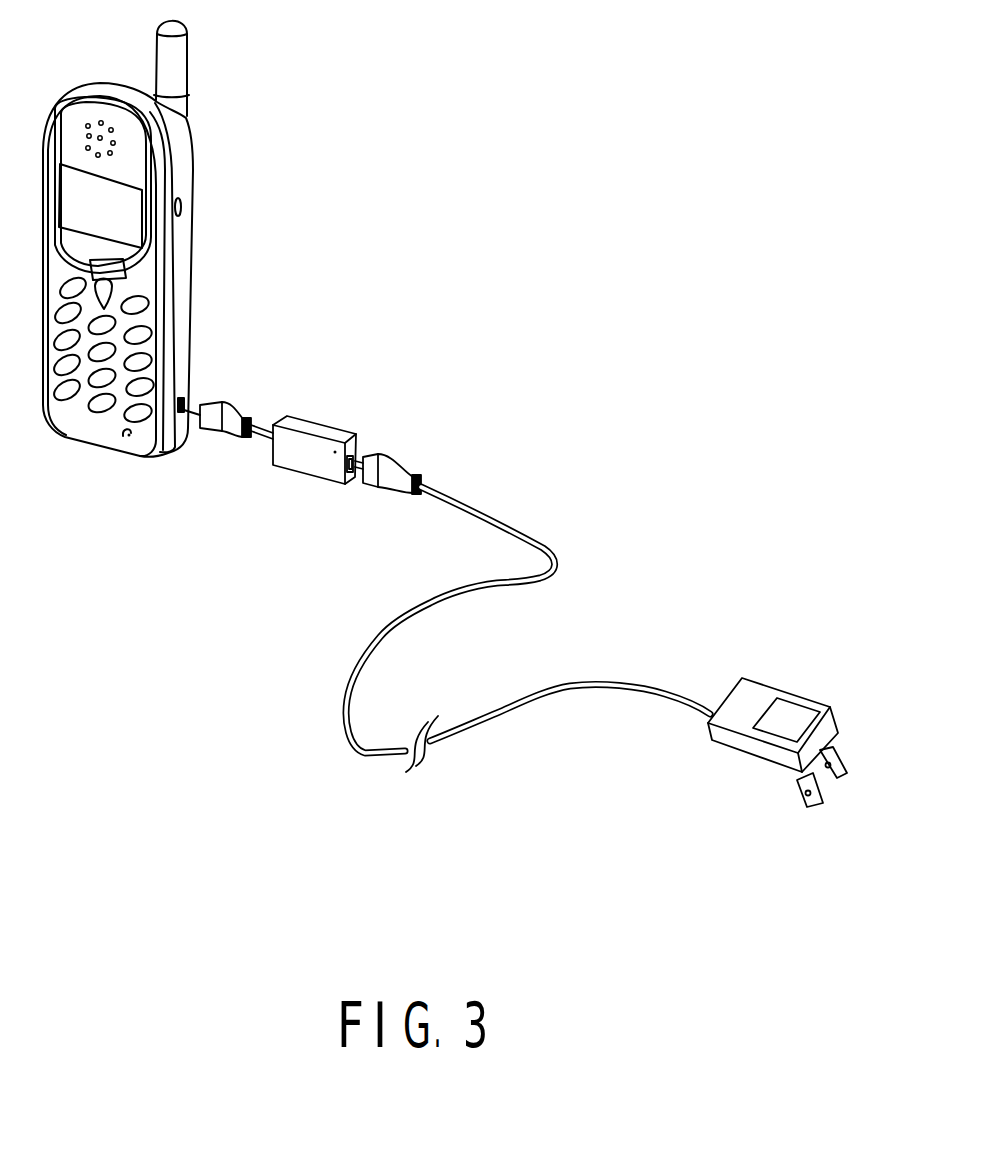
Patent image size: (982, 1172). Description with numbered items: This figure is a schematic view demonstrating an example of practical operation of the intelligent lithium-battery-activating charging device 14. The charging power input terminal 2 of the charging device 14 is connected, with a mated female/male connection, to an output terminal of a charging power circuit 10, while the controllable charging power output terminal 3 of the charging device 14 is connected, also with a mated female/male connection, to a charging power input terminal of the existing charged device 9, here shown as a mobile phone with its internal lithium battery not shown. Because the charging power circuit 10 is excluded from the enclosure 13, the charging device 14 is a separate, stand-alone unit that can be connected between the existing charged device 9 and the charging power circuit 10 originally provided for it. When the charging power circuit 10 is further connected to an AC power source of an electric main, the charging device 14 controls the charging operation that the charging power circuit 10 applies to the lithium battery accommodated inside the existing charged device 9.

The existing charged device 9 is at (192, 258).
The controllable charging power output terminal 3 is at (213, 403).
The enclosure 13 is at (307, 423).
The charging power input terminal 2 is at (363, 443).
The intelligent lithium-battery-activating charging device 14 is at (278, 363).
The charging power circuit 10 is at (735, 743).